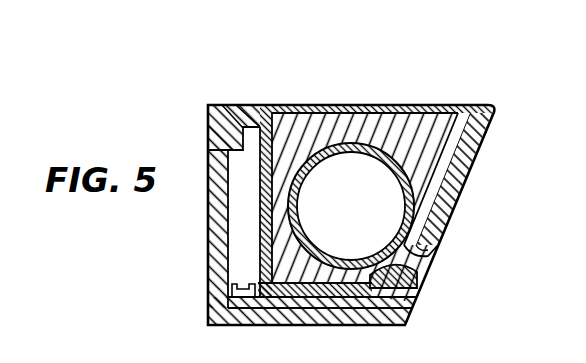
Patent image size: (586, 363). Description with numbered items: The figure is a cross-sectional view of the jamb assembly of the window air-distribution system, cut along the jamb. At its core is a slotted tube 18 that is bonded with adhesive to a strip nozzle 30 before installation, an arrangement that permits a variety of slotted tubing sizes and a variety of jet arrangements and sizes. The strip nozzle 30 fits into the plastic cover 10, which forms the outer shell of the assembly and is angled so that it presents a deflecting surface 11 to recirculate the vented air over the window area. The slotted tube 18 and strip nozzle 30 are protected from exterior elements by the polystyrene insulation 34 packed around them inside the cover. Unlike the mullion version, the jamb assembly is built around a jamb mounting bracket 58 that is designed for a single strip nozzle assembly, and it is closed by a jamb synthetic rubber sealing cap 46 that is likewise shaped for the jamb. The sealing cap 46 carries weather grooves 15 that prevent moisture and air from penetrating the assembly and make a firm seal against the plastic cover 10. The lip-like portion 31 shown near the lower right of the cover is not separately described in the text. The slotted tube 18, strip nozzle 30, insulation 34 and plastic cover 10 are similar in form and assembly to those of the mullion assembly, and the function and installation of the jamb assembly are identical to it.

The plastic cover 10 is at (401, 106).
The deflecting surface 11 is at (484, 146).
The weather grooves 15 is at (249, 108).
The slotted tubing 18 is at (329, 165).
The strip nozzle 30 is at (418, 286).
The sealing lip 31 is at (434, 257).
The polystyrene insulation 34 is at (434, 142).
The jamb synthetic rubber sealing cap 46 is at (238, 106).
The jamb mounting bracket 58 is at (209, 249).